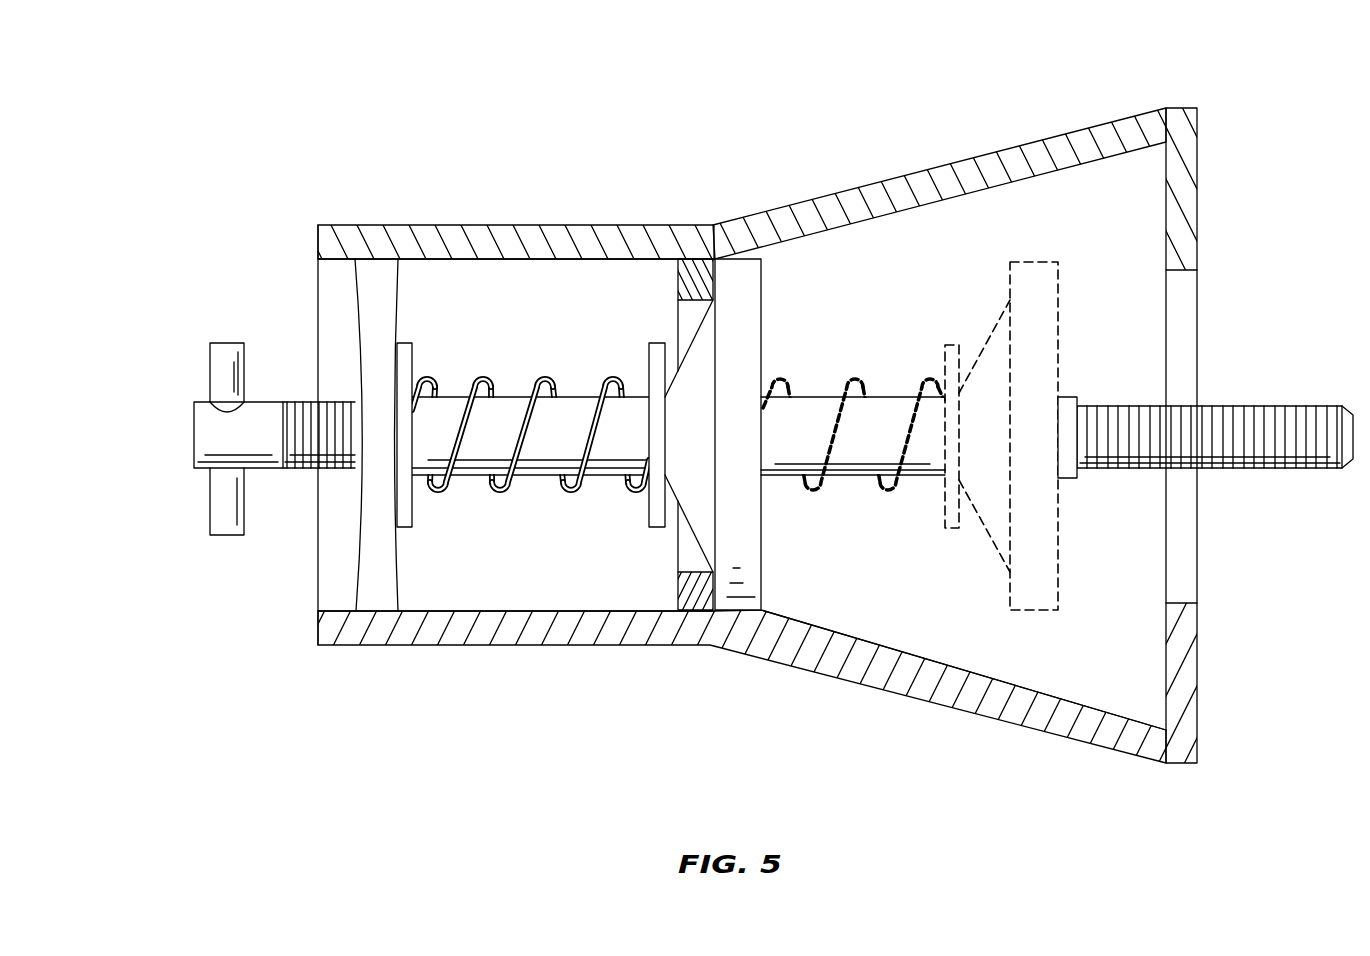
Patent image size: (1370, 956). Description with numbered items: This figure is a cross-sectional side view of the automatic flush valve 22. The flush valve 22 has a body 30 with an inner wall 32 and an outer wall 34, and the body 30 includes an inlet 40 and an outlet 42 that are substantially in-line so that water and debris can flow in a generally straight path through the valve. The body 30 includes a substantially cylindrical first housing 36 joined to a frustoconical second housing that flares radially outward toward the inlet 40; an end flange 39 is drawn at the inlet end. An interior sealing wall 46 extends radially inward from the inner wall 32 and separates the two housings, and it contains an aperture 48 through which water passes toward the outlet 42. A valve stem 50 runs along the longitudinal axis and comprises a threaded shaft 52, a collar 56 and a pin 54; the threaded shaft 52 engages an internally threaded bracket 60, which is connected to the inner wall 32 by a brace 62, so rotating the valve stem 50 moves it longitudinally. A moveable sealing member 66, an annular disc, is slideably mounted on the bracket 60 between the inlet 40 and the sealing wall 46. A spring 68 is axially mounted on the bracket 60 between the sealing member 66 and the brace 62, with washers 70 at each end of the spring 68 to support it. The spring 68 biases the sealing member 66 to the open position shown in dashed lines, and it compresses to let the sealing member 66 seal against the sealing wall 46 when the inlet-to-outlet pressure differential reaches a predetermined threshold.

The flush valve 22 is at (602, 140).
The body 30 is at (890, 180).
The inner wall 32 is at (905, 655).
The outer wall 34 is at (915, 700).
The first housing 36 is at (378, 225).
The end flange 39 is at (1087, 126).
The inlet 40 is at (1242, 333).
The outlet 42 is at (292, 313).
The sealing wall 46 is at (677, 283).
The aperture 48 is at (666, 318).
The valve stem 50 is at (166, 443).
The threaded shaft 52 is at (1312, 406).
The pin 54 is at (222, 508).
The collar 56 is at (193, 410).
The bracket 60 is at (1068, 405).
The brace 62 is at (353, 570).
The moveable sealing member 66 is at (745, 294).
The spring 68 is at (502, 490).
The washers 70 is at (413, 522).